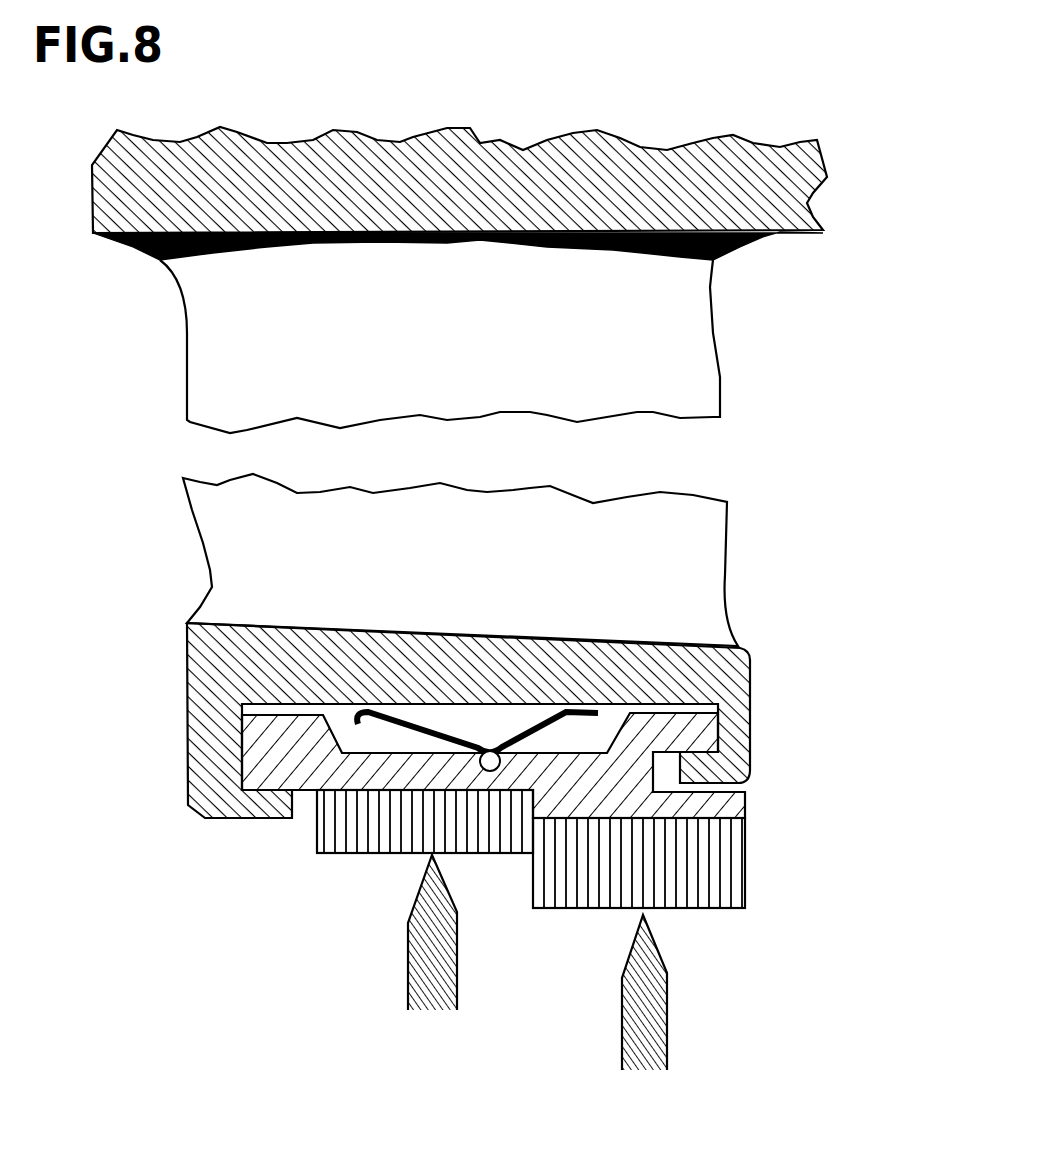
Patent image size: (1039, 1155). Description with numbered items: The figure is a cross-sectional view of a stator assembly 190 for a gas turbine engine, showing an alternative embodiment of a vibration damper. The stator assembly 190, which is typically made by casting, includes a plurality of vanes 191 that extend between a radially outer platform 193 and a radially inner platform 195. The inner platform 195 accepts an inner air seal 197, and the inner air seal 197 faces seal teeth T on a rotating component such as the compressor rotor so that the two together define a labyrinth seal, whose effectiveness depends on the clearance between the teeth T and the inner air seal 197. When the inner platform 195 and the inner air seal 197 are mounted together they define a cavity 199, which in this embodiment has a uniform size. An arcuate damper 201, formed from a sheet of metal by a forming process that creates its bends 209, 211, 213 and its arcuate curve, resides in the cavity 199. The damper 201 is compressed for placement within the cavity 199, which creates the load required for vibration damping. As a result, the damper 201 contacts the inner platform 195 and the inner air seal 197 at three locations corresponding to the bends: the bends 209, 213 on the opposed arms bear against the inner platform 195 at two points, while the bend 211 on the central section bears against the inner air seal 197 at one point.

The stator assembly 190 is at (790, 350).
The vane 191 is at (492, 382).
The radially outer platform 193 is at (362, 150).
The radially inner platform 195 is at (237, 623).
The inner air seal 197 is at (398, 853).
The cavity 199 is at (640, 702).
The arcuate damper 201 is at (423, 707).
The bend 209 is at (383, 705).
The bend 211 is at (503, 752).
The bend 213 is at (592, 712).
The seal teeth T is at (620, 1032).